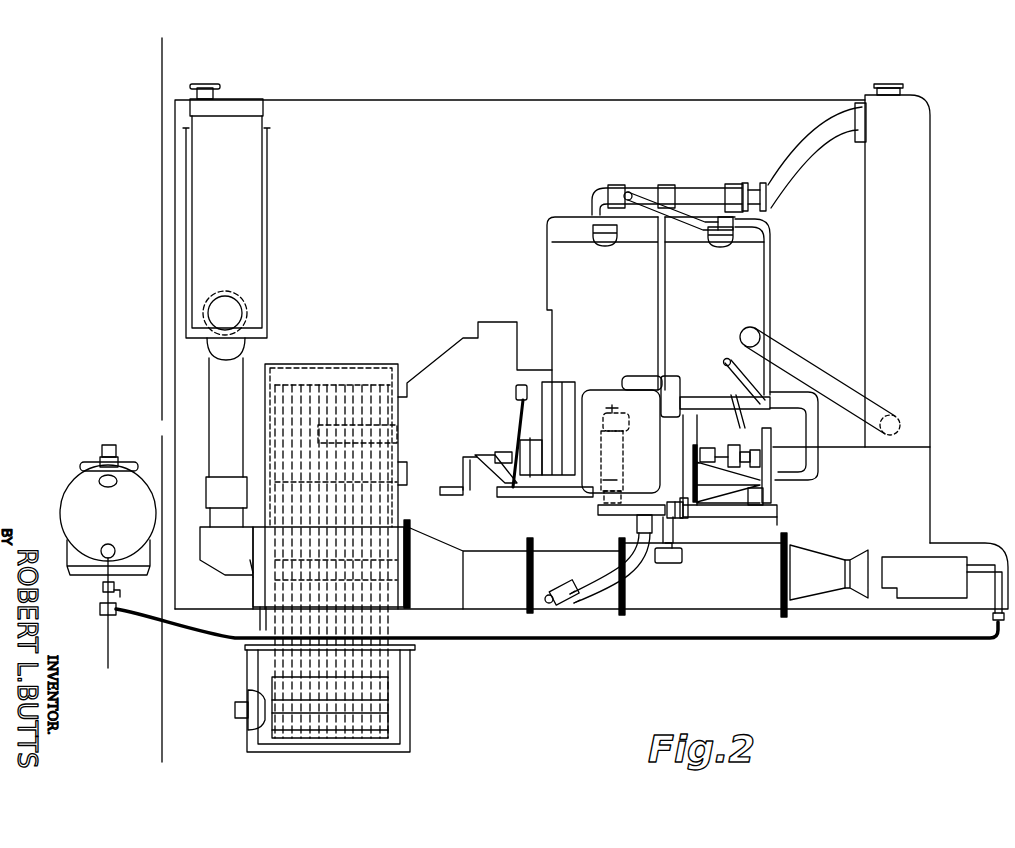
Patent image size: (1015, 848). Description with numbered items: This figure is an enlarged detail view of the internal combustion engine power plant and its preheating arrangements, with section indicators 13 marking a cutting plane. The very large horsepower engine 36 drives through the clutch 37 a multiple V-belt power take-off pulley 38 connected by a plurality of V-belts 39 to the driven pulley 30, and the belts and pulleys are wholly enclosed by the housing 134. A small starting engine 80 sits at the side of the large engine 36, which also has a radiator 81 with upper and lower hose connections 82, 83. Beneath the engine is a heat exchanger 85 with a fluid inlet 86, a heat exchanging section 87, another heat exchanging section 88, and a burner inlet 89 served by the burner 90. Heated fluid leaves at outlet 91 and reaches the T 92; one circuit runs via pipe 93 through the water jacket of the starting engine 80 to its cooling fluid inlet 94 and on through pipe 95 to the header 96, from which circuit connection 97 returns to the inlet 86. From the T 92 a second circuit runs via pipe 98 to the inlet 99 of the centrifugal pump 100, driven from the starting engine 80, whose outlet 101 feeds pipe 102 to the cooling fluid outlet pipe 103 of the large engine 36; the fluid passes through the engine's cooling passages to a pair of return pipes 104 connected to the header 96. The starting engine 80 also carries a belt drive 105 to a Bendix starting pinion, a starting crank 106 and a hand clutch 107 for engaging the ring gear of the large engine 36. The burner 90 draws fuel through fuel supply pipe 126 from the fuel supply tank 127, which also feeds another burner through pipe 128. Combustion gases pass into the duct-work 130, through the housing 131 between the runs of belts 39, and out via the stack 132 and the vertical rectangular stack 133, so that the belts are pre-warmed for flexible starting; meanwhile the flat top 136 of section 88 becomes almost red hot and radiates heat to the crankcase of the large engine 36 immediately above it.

The section line 13- 13 is at (137, 48).
The driven pulley 30 is at (310, 737).
The internal combustion engine 36 is at (655, 303).
The clutch 37 is at (450, 348).
The power take-off pulley 38 is at (358, 383).
The V-belts 39 is at (293, 383).
The starting engine 80 is at (597, 388).
The radiator 81 is at (910, 217).
The upper hose connection 82 is at (818, 137).
The lower hose connection 83 is at (822, 380).
The heat exchanger 85 is at (733, 582).
The fluid inlet 86 is at (548, 578).
The heat exchanging section 87 is at (590, 597).
The heat exchanging section 88 is at (679, 595).
The burner inlet 89 is at (823, 565).
The burner 90 is at (935, 570).
The outlet 91 is at (672, 530).
The T 92 is at (675, 392).
The pipe 93 is at (647, 376).
The cooling fluid inlet 94 is at (622, 428).
The pipe 95 is at (612, 473).
The header 96 is at (612, 508).
The circuit connection 97 is at (632, 560).
The pipe 98 is at (700, 397).
The pump inlet 99 is at (782, 446).
The centrifugal pump 100 is at (768, 462).
The pump outlet 101 is at (826, 397).
The pipe 102 is at (772, 285).
The cooling fluid outlet pipe 103 is at (646, 193).
The return pipes 104 is at (757, 370).
The belt drive 105 is at (564, 380).
The starting crank 106 is at (468, 458).
The hand clutch 107 is at (515, 412).
The fuel supply pipe 126 is at (502, 640).
The fuel supply tank 127 is at (80, 494).
The pipe 128 is at (110, 648).
The duct-work 130 is at (485, 594).
The housing 131 is at (393, 562).
The stack 132 is at (230, 380).
The vertical rectangular stack 133 is at (262, 125).
The housing 134 is at (327, 365).
The top 136 is at (765, 540).